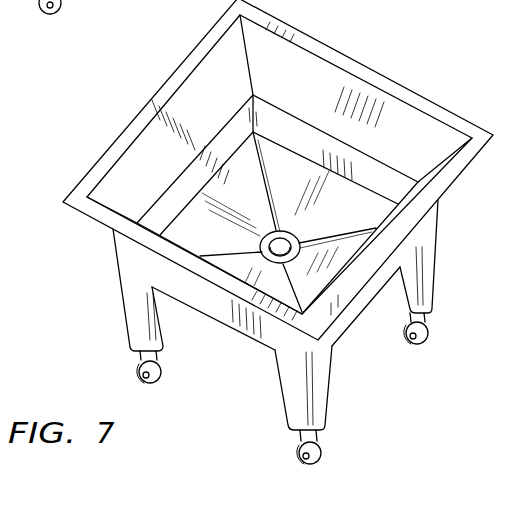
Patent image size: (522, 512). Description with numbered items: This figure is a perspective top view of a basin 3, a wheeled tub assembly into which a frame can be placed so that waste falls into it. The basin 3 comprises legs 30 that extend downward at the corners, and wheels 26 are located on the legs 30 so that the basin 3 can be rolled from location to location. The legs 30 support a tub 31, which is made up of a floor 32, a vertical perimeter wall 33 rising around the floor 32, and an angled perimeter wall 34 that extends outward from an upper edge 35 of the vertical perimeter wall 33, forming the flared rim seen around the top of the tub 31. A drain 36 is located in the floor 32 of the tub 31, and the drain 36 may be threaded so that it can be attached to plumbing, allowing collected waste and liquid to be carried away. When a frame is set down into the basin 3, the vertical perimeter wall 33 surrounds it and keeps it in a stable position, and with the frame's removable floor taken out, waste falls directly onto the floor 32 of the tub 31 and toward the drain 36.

The basin 3 is at (428, 34).
The wheels 26 is at (40, 12).
The legs 30 is at (125, 290).
The tub 31 is at (86, 240).
The floor 32 is at (305, 195).
The vertical perimeter wall 33 is at (310, 143).
The angled perimeter wall 34 is at (283, 80).
The upper edge 35 is at (233, 115).
The drain 36 is at (262, 245).